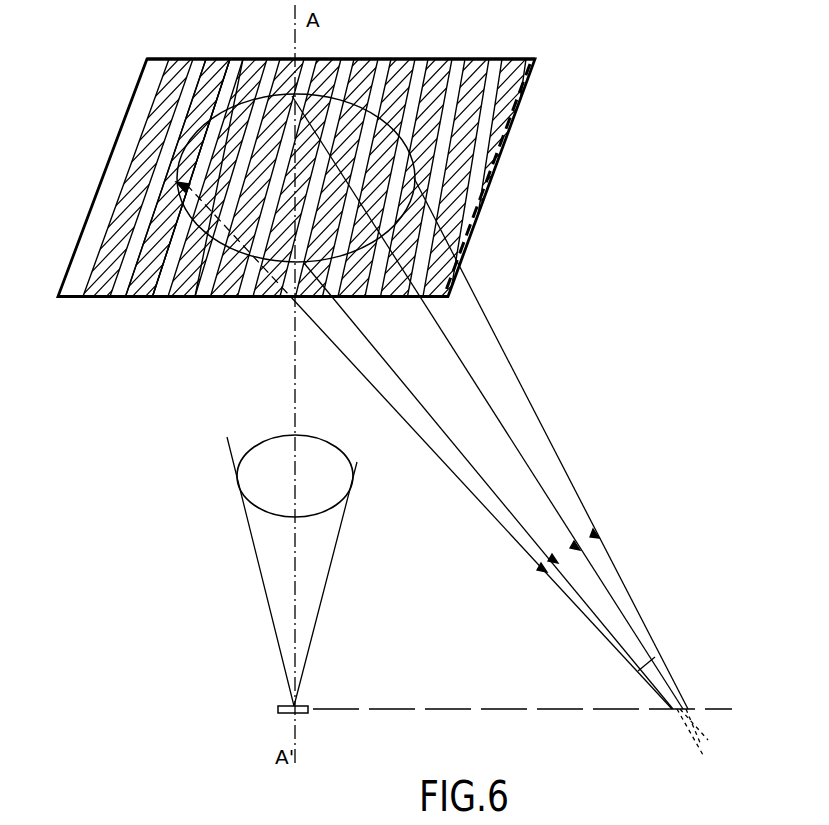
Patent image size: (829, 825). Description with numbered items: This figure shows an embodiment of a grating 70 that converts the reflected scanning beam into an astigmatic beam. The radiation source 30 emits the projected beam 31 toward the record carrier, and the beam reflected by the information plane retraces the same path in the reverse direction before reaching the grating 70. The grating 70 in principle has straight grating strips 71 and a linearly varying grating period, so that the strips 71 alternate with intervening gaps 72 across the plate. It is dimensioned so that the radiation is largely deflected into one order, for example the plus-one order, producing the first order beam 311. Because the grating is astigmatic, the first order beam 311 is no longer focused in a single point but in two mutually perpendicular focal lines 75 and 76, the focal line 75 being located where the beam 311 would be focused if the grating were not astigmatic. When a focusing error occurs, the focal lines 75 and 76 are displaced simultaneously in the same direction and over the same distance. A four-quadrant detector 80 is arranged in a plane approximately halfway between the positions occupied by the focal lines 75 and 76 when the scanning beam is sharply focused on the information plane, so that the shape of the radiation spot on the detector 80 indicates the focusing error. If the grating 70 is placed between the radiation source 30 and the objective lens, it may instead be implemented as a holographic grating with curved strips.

The grating 70 is at (520, 121).
The grating strips 71 is at (219, 72).
The transparent strip 72 is at (275, 70).
The projected beam 31 is at (370, 60).
The first order beam 311 is at (525, 492).
The focal line 75 is at (645, 665).
The focal line 76 is at (700, 735).
The four-quadrant detector 80 is at (719, 709).
The radiation source 30 is at (303, 713).